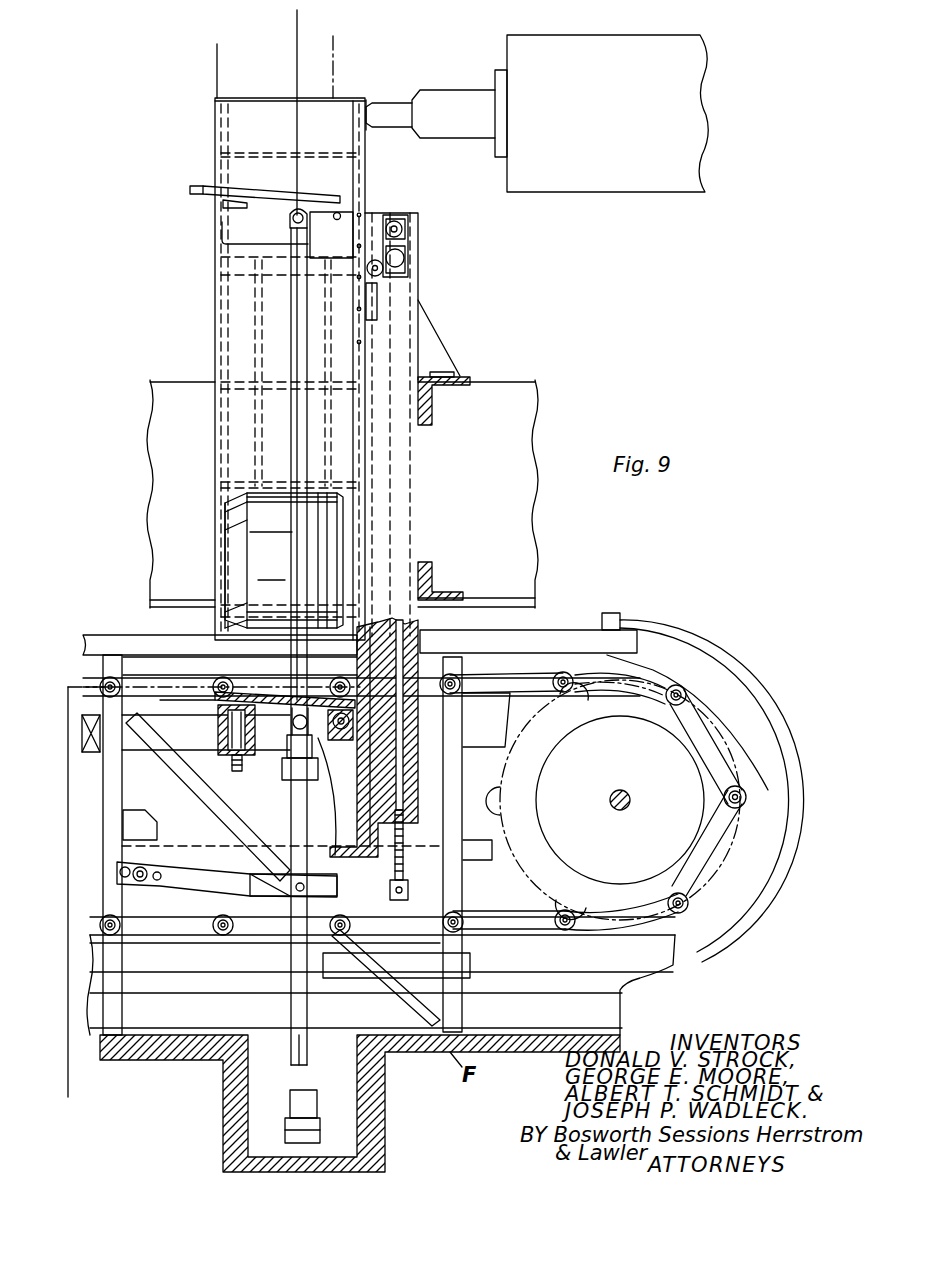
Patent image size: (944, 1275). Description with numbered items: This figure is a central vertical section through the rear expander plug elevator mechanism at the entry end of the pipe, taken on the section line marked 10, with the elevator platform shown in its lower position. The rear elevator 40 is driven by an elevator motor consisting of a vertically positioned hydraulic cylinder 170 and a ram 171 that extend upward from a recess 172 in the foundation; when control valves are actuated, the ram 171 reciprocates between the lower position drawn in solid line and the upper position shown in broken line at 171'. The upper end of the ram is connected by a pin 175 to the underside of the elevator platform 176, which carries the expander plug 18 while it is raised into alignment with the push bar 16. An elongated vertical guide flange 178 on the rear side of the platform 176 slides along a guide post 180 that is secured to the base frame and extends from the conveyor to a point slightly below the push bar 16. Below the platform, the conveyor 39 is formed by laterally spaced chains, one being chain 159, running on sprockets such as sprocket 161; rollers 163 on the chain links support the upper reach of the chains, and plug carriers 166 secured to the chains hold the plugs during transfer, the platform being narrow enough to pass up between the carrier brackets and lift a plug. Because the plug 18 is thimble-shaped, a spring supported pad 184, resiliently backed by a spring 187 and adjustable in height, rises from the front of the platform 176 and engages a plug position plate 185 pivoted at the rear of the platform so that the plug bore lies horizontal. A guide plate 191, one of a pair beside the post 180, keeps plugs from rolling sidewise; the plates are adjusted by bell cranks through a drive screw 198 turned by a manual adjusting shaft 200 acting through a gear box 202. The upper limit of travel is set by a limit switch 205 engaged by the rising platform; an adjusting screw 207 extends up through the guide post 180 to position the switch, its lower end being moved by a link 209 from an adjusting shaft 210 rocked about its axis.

The section line 10- 10 is at (296, 20).
The push bar 16 is at (642, 158).
The expander plug 18 is at (333, 36).
The guide plate 191 is at (226, 134).
The plug position plate 185 is at (255, 196).
The ram upper position 171' is at (217, 227).
The pin 175 is at (270, 745).
The manual adjusting shaft 200 is at (397, 222).
The gear box 202 is at (412, 246).
The drive screw 198 is at (384, 275).
The limit switch 205 is at (378, 312).
The rear elevator 40 is at (448, 322).
The guide post 180 is at (412, 505).
The plug carrier 166 is at (212, 634).
The roller 163 is at (452, 676).
The recess 172 is at (338, 1124).
The hydraulic cylinder 170 is at (310, 1062).
The spring supported pad 184 is at (222, 706).
The elevator platform 176 is at (277, 727).
The ram 171 is at (322, 744).
The guide flange 178 is at (355, 780).
The spring 187 is at (260, 747).
The link 209 is at (242, 880).
The adjusting shaft 210 is at (140, 880).
The adjusting screw 207 is at (402, 838).
The conveyor 39 is at (552, 652).
The chain 159 is at (640, 690).
The sprocket 161 is at (718, 724).